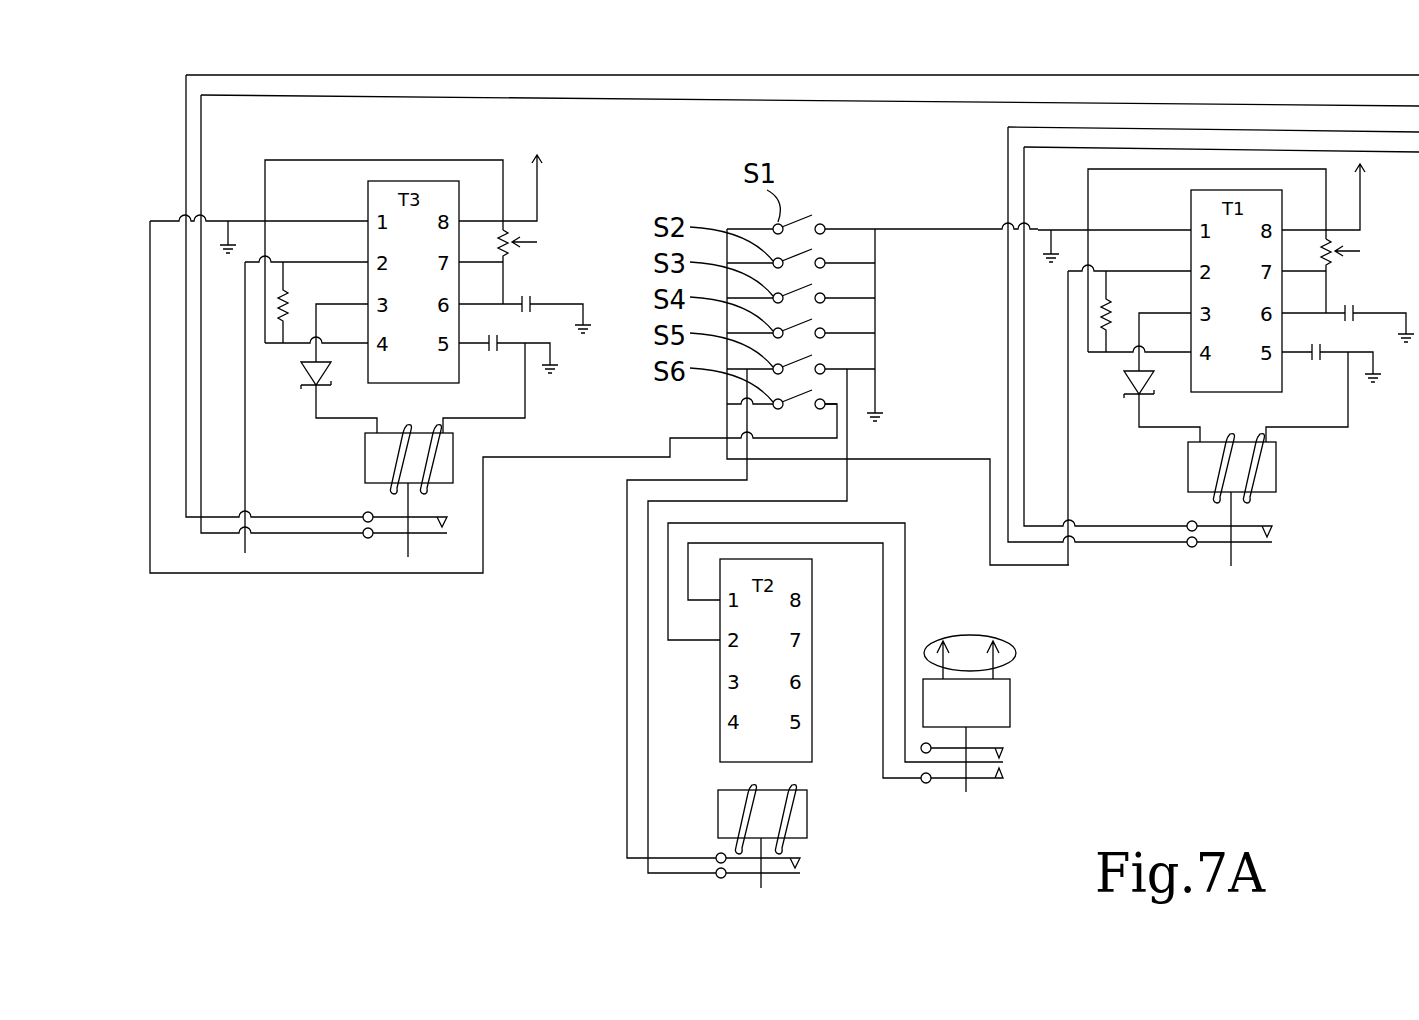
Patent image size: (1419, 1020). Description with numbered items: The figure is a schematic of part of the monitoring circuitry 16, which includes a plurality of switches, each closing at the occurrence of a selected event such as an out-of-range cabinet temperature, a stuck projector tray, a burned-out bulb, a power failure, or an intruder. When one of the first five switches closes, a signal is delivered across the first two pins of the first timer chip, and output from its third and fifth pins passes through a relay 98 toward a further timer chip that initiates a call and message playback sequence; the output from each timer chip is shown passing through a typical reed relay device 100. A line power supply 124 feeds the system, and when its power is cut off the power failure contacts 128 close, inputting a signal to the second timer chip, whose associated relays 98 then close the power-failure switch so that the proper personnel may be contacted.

The monitoring circuitry 16 is at (688, 58).
The relay 98 is at (385, 565).
The reed relay device 100 is at (1277, 536).
The line power supply 124 is at (1016, 657).
The power failure contacts 128 is at (1029, 774).